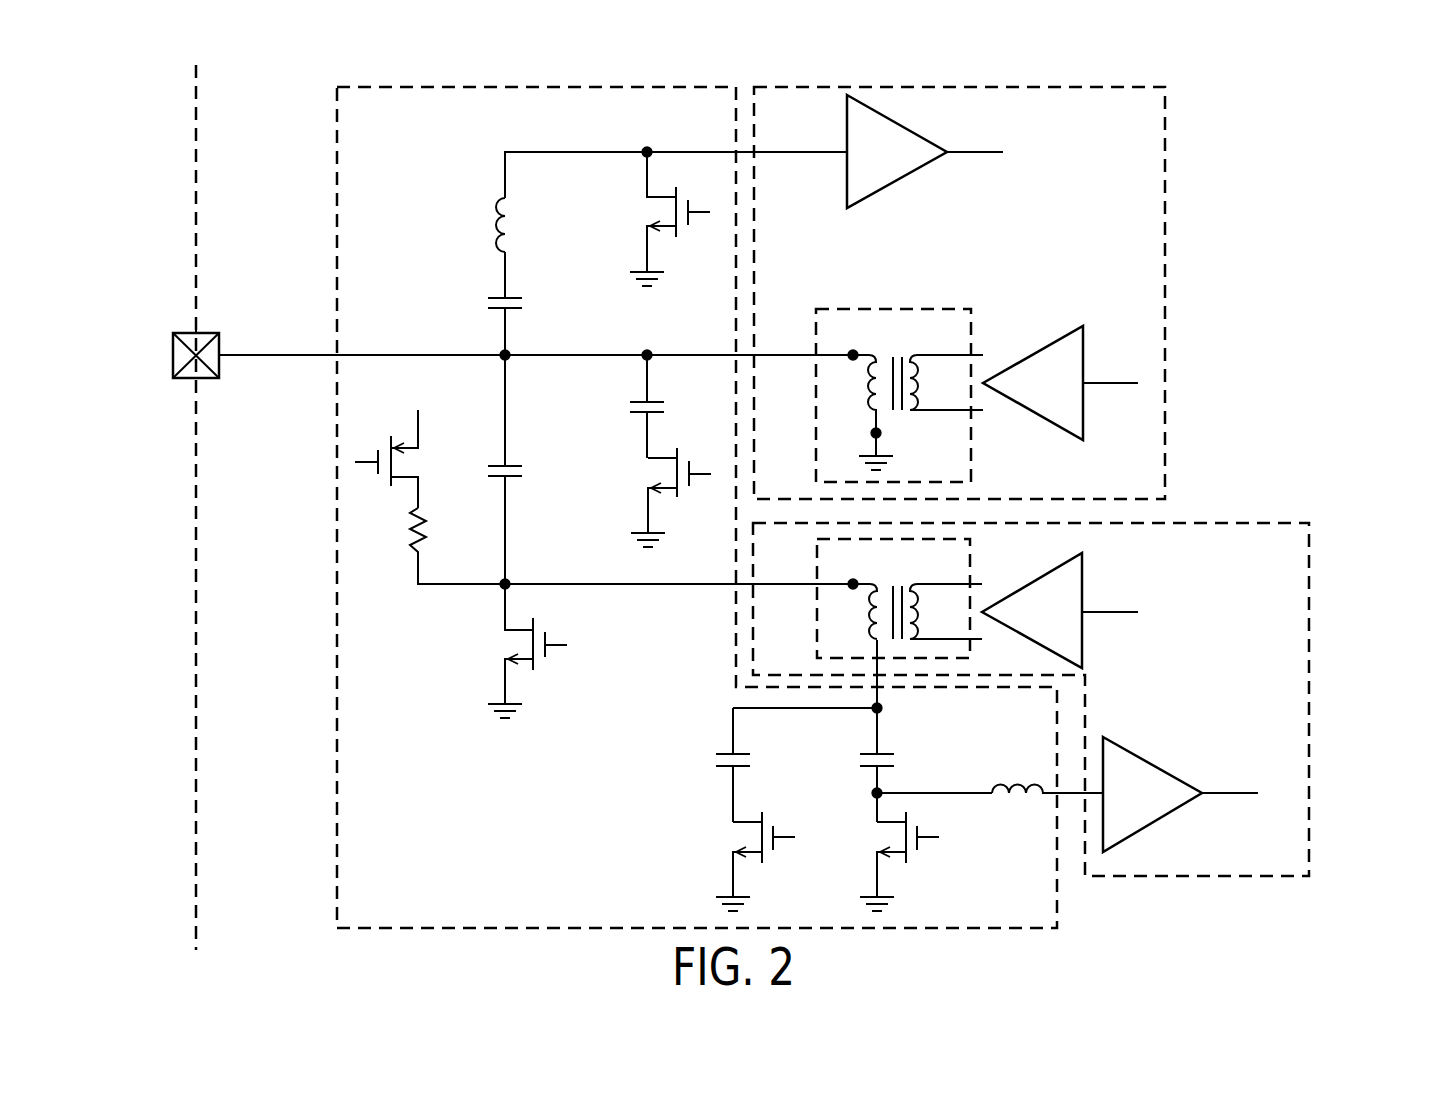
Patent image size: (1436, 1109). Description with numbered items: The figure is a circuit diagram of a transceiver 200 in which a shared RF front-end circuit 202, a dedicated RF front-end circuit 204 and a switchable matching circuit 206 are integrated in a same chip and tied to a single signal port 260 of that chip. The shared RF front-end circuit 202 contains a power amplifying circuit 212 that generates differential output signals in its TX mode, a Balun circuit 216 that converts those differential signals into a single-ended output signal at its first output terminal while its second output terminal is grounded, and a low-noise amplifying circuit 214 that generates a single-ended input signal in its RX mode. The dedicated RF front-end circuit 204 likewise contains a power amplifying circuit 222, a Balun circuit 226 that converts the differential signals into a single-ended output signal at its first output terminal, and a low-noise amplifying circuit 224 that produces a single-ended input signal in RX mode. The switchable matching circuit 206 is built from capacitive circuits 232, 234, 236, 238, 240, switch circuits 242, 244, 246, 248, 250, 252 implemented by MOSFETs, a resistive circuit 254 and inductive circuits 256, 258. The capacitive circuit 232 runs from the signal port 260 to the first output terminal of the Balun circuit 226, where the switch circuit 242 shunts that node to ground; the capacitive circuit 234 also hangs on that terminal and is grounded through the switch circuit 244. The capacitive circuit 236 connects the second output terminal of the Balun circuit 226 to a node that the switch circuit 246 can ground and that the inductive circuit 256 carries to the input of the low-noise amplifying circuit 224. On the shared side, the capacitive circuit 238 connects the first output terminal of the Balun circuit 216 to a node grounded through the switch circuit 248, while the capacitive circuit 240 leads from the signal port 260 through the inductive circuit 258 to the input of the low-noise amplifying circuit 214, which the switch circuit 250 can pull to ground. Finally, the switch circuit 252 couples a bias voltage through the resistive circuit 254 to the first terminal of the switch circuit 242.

The transceiver 200 is at (1296, 126).
The shared RF front-end circuit 202 is at (1165, 188).
The dedicated RF front-end circuit 204 is at (1310, 581).
The switchable matching circuit 206 is at (336, 273).
The power amplifying circuit 212 is at (1047, 328).
The low-noise amplifying circuit 214 is at (900, 180).
The Balun circuit 216 is at (928, 308).
The power amplifying circuit 222 is at (1083, 581).
The low-noise amplifying circuit 224 is at (1150, 763).
The Balun circuit 226 is at (817, 612).
The capacitive circuit 232 is at (530, 458).
The capacitive circuit 234 is at (714, 742).
The capacitive circuit 236 is at (852, 745).
The capacitive circuit 238 is at (627, 396).
The capacitive circuit 240 is at (484, 285).
The switch circuit 242 is at (490, 636).
The switch circuit 244 is at (719, 829).
The switch circuit 246 is at (924, 869).
The switch circuit 248 is at (700, 452).
The switch circuit 250 is at (691, 248).
The switch circuit 252 is at (380, 494).
The resistive circuit 254 is at (440, 534).
The inductive circuit 256 is at (1016, 776).
The inductive circuit 258 is at (484, 210).
The signal port 260 is at (173, 357).